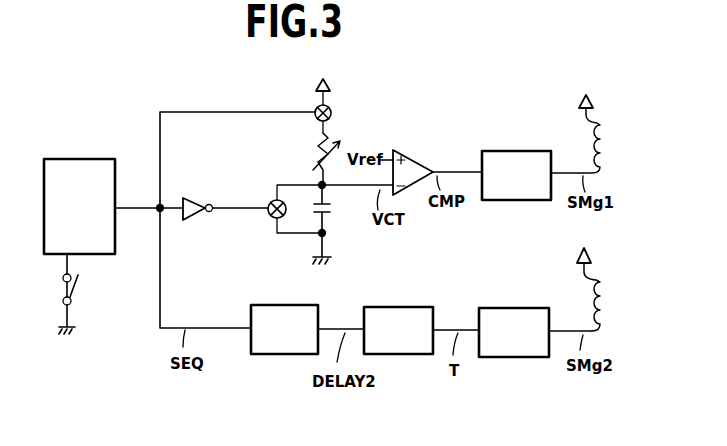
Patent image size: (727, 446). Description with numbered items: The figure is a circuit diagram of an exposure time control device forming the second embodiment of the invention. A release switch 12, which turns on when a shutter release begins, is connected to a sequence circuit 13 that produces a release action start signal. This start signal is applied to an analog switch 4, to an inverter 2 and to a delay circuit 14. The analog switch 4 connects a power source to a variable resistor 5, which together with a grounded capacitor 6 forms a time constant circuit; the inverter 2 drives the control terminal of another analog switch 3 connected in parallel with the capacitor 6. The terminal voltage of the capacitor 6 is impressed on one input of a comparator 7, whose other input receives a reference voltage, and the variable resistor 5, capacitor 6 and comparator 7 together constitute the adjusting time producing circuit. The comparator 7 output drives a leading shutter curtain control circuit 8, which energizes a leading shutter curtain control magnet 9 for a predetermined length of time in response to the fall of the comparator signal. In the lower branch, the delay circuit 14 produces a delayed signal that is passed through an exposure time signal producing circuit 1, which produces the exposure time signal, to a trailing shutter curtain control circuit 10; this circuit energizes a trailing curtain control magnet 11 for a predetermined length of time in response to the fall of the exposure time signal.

The exposure time signal producing circuit 1 is at (402, 307).
The inverter 2 is at (194, 197).
The analog switch 3 is at (270, 218).
The analog switch 4 is at (333, 110).
The variable resistor 5 is at (313, 153).
The capacitor 6 is at (333, 209).
The comparator 7 is at (410, 152).
The leading shutter curtain control circuit 8 is at (522, 151).
The leading shutter curtain control magnet 9 is at (605, 152).
The trailing shutter curtain control circuit 10 is at (503, 308).
The trailing curtain control magnet 11 is at (603, 301).
The release switch 12 is at (62, 293).
The sequence circuit 13 is at (73, 159).
The delay circuit 14 is at (268, 305).